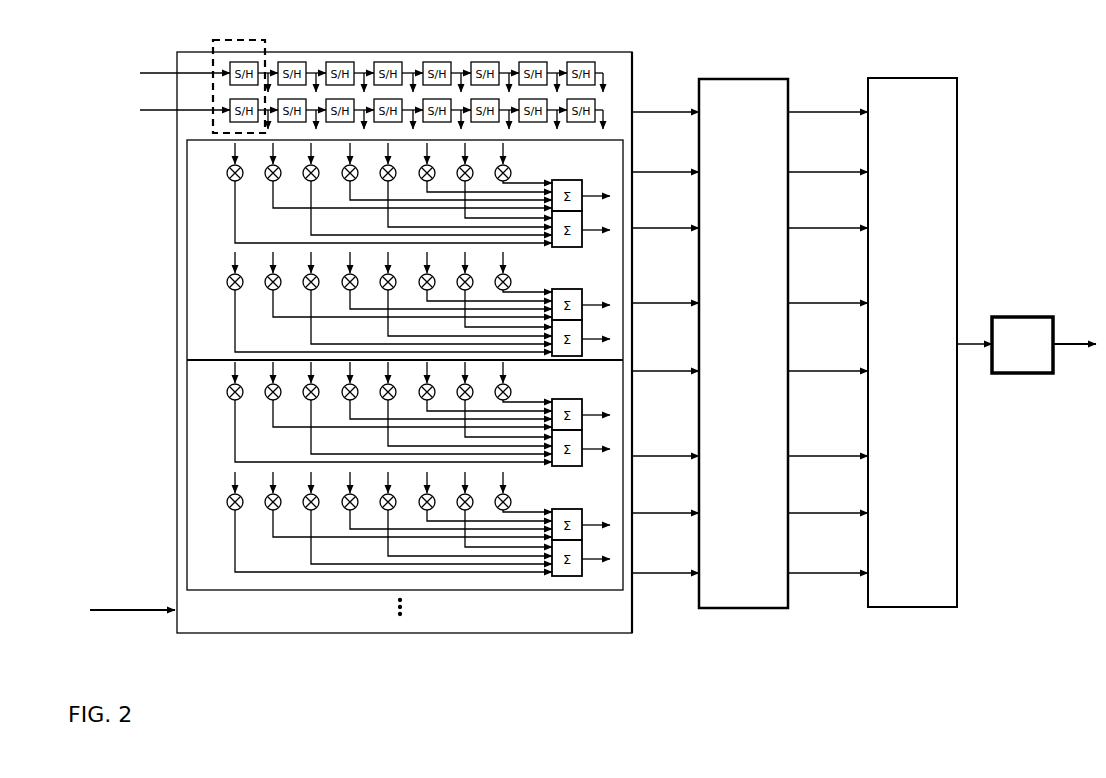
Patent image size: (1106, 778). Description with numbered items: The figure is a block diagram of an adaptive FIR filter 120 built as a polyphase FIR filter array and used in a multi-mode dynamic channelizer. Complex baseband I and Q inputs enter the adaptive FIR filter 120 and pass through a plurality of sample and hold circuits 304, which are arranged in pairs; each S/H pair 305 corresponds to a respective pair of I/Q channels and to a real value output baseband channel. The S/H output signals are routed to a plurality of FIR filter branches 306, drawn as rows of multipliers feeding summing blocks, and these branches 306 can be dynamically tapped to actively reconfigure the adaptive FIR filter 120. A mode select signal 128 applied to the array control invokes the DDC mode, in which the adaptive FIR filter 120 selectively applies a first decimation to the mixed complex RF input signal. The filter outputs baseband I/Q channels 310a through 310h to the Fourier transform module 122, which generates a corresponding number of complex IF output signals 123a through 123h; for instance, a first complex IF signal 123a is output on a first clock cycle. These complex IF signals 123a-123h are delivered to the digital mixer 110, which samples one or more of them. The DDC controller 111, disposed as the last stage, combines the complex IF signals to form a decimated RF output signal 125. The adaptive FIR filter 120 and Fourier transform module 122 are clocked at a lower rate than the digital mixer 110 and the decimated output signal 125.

The adaptive FIR filter 120 is at (150, 49).
The sample and hold circuits 304 is at (353, 53).
The S/H pair 305 is at (241, 40).
The FIR filter branches 306 is at (232, 226).
The mode select signal 128 is at (111, 613).
The I/Q channel 310a is at (661, 107).
The I/Q channel 310h is at (651, 579).
The Fourier transform module 122 is at (763, 76).
The complex IF signal 123a is at (830, 106).
The complex IF signal 123h is at (807, 586).
The digital mixer 110 is at (951, 76).
The DDC controller 111 is at (1015, 317).
The decimated RF output signal 125 is at (1070, 343).